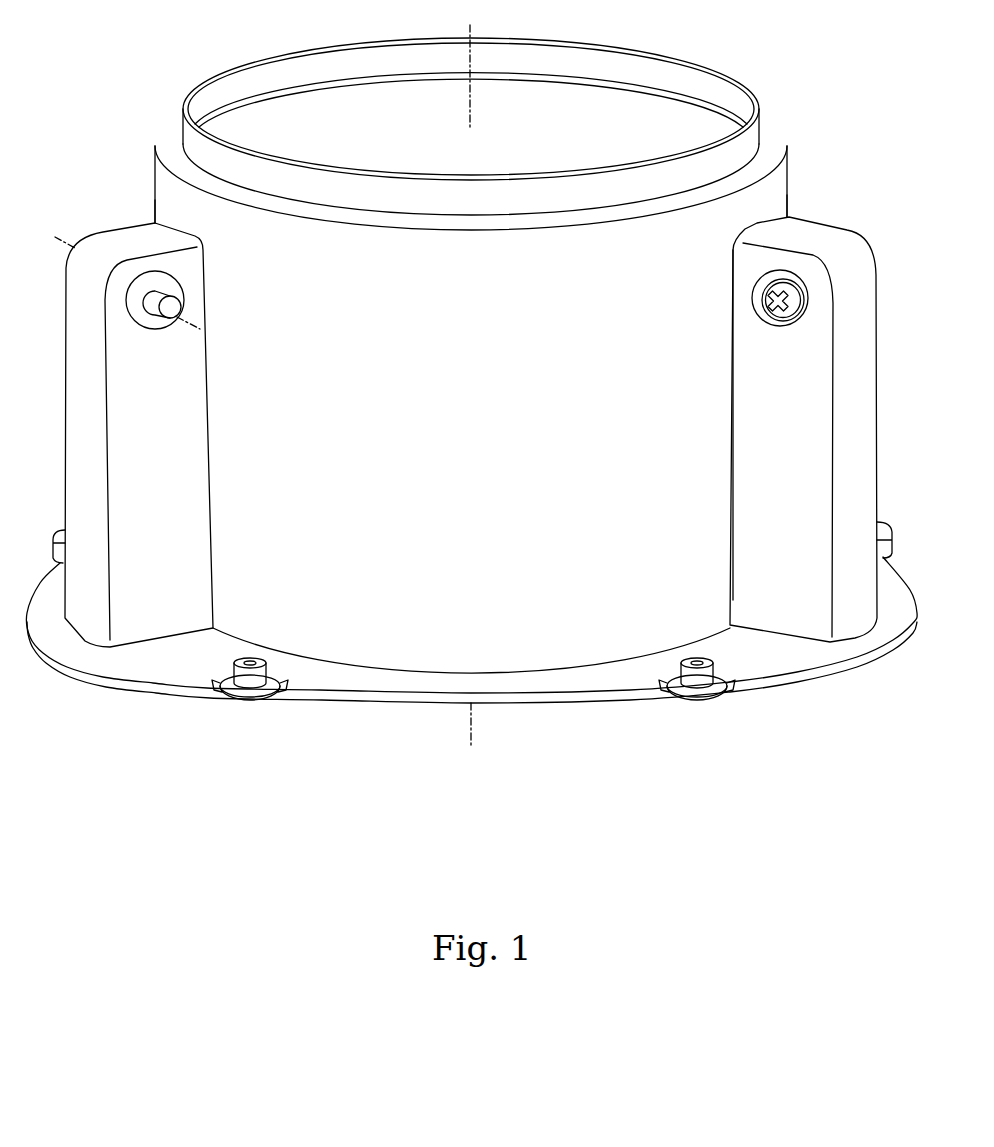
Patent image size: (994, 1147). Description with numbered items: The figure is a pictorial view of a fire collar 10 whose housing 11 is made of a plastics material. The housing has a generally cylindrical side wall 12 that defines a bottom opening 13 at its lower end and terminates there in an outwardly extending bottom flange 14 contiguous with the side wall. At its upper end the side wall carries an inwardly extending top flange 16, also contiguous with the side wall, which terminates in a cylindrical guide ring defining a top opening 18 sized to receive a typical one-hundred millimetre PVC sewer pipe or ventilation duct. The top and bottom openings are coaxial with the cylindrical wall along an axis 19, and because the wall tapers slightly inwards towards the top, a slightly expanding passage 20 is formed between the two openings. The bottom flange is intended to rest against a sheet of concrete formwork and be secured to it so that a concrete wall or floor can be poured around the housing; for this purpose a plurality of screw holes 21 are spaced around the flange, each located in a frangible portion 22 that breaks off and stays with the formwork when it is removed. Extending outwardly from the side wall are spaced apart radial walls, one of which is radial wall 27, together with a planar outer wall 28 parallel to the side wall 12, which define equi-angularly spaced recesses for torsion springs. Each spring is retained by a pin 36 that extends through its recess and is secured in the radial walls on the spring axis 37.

The fire collar 10 is at (841, 136).
The housing 11 is at (471, 434).
The cylindrical side wall 12 is at (772, 202).
The bottom opening 13 is at (408, 705).
The bottom flange 14 is at (810, 658).
The top flange 16 is at (773, 143).
The top opening 18 is at (400, 95).
The axis 19 is at (473, 32).
The expanding passage 20 is at (583, 98).
The screw holes 21 is at (887, 543).
The frangible portions 22 is at (217, 691).
The radial wall 27 is at (752, 427).
The outer wall 28 is at (865, 317).
The pin 36 is at (172, 309).
The spring axis 37 is at (203, 331).